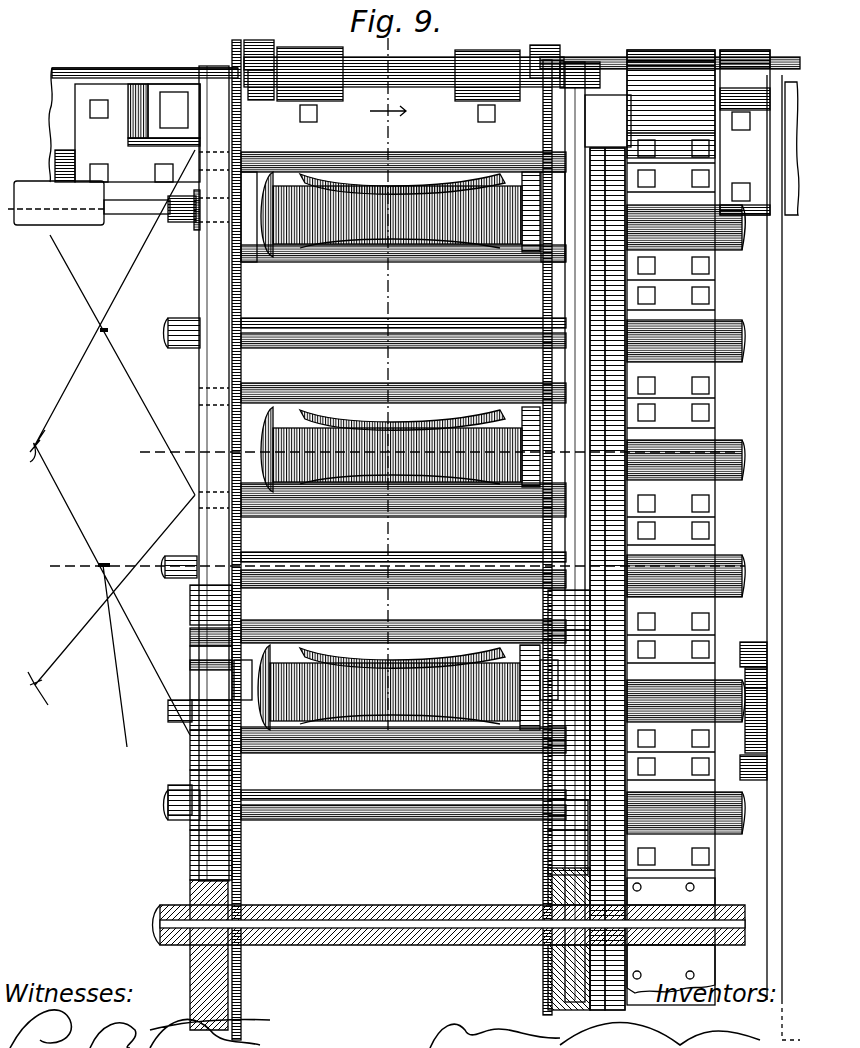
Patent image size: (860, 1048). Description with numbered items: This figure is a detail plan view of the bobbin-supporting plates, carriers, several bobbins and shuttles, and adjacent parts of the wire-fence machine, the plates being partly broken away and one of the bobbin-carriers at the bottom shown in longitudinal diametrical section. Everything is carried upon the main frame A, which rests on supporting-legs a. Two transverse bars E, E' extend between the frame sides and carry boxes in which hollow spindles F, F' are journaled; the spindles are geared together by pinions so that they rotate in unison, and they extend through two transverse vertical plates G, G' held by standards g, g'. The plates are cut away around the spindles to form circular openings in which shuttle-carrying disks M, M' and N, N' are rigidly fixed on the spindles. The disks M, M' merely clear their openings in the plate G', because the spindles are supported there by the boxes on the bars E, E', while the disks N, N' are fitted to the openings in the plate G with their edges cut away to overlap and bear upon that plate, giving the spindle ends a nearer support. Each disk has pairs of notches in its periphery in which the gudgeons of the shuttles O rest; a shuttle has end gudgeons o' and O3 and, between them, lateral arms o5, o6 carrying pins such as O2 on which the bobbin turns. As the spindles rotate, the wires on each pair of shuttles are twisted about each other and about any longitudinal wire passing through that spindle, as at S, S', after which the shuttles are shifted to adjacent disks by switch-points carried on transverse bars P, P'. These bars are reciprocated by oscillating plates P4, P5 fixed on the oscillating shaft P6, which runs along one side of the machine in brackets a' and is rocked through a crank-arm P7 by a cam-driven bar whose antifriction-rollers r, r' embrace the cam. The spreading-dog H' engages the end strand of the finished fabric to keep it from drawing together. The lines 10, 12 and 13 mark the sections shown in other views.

The main frame A is at (52, 128).
The transverse vertical plate G is at (209, 535).
The transverse vertical plate G' is at (582, 517).
The standard g is at (174, 110).
The standard g' is at (608, 121).
The spreading-dog H' is at (56, 215).
The longitudinal wire S is at (152, 218).
The longitudinal wire S' is at (171, 551).
The transverse bar P is at (403, 232).
The transverse bar P' is at (392, 540).
The oscillating plate P4 is at (545, 56).
The oscillating plate P5 is at (256, 48).
The oscillating shaft P6 is at (404, 107).
The crank-arm P7 is at (770, 76).
The shuttle O is at (438, 160).
The gudgeon o' is at (486, 449).
The pin O2 is at (210, 690).
The gudgeon O3 is at (192, 634).
The laterally-projecting arm o5 is at (545, 170).
The laterally-projecting arm o6 is at (252, 190).
The supporting-leg a is at (396, 453).
The bracket a' is at (398, 91).
The transverse bar E is at (690, 519).
The transverse bar E' is at (671, 935).
The hollow spindle F is at (449, 527).
The hollow spindle F' is at (365, 554).
The rod R is at (785, 557).
The gear R' is at (776, 720).
The antifriction-roller r is at (769, 655).
The antifriction-roller r' is at (771, 771).
The shuttle-carrying disk N is at (175, 843).
The shuttle-carrying disk N' is at (192, 691).
The shuttle-carrying disk M is at (545, 820).
The shuttle-carrying disk M' is at (548, 747).
The section line 10 is at (387, 408).
The section line 12 is at (786, 577).
The section line 13 is at (148, 453).